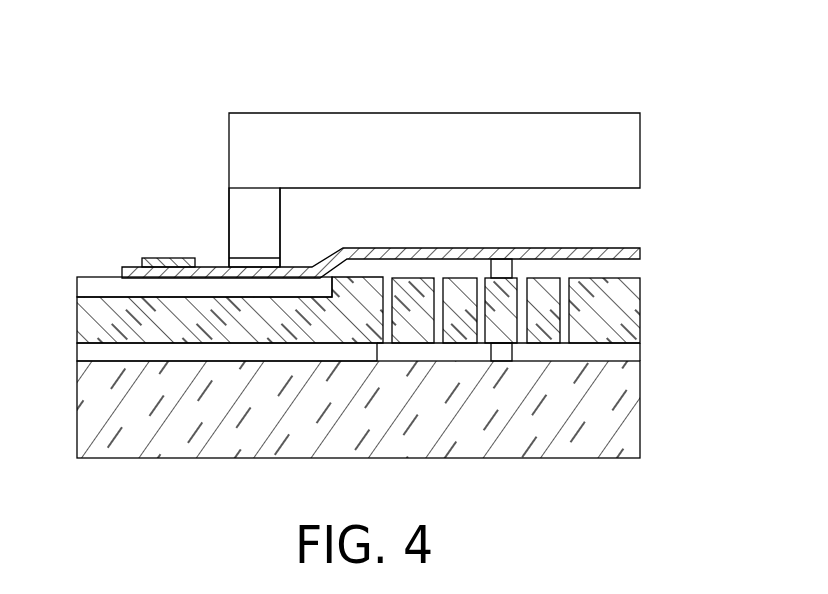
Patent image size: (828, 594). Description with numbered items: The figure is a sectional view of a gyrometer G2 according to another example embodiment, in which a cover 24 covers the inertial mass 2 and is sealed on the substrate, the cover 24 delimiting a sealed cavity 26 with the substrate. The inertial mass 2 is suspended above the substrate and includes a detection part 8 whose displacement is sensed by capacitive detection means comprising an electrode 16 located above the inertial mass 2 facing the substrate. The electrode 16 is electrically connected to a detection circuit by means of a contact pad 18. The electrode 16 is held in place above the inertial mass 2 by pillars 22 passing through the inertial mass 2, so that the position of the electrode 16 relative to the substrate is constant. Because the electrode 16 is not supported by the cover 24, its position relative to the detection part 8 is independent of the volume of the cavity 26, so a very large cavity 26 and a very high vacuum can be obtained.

The inertial mass 2 is at (563, 350).
The detection part 8 is at (555, 315).
The electrode 16 is at (628, 243).
The contact pad 18 is at (167, 262).
The pillars 22 is at (502, 297).
The cover 24 is at (226, 169).
The sealed cavity 26 is at (535, 232).
The gyrometer G2 is at (403, 144).